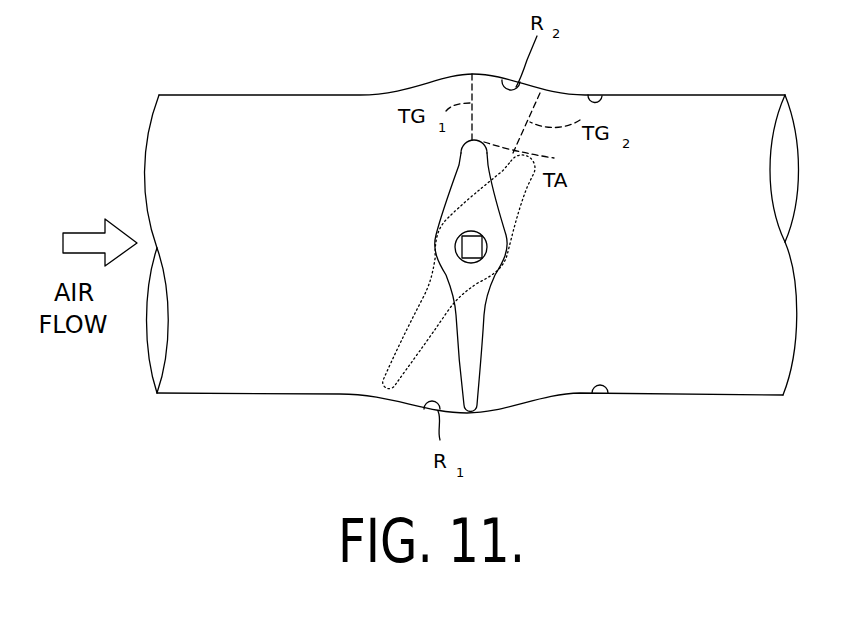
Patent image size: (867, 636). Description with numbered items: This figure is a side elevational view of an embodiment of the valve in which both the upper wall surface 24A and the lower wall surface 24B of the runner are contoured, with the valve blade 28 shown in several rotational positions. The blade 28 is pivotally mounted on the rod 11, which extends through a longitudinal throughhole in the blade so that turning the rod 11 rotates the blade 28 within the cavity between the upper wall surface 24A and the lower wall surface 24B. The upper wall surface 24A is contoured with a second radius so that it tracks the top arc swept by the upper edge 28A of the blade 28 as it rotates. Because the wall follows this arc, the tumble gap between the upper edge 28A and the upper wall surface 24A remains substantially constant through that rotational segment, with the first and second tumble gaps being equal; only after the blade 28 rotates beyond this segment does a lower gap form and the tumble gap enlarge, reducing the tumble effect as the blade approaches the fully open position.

The rod 11 is at (470, 247).
The valve blade 28 is at (474, 331).
The upper edge 28A is at (462, 146).
The upper wall surface 24A is at (602, 96).
The lower wall surface 24B is at (606, 394).